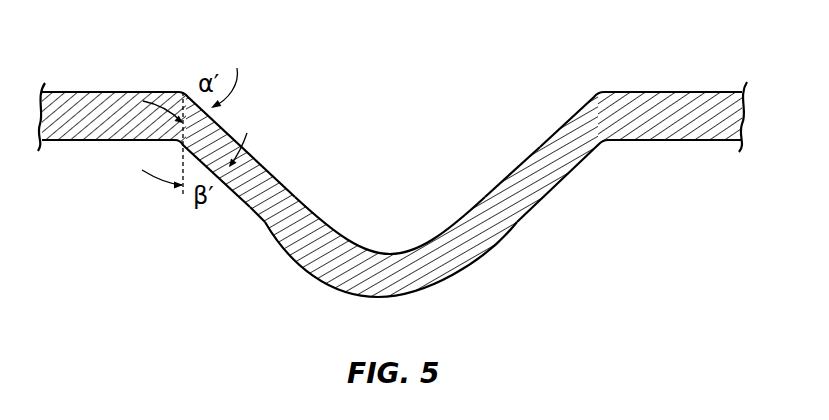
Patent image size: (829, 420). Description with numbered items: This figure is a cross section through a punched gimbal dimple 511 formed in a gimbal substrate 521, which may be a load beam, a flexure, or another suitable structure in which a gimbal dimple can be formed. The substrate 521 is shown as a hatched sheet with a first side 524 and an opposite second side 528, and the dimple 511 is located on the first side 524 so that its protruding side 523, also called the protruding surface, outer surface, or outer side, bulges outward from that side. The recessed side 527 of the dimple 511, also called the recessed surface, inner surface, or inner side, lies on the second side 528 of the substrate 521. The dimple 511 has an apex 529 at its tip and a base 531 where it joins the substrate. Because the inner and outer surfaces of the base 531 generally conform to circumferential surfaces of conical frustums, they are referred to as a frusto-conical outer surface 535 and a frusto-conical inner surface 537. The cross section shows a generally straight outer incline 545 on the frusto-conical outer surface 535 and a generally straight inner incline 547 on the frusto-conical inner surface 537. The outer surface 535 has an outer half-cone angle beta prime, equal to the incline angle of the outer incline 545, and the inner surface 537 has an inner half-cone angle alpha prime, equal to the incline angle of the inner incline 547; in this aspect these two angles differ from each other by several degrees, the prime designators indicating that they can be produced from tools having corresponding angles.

The dimple 511 is at (500, 291).
The gimbal substrate 521 is at (114, 130).
The protruding side 523 is at (517, 222).
The first side 524 is at (670, 140).
The recessed side 527 is at (510, 176).
The second side 528 is at (677, 93).
The apex 529 is at (392, 298).
The base 531 is at (557, 150).
The frusto-conical outer surface 535 is at (237, 194).
The frusto-conical inner surface 537 is at (269, 153).
The outer incline 545 is at (250, 207).
The inner incline 547 is at (289, 204).